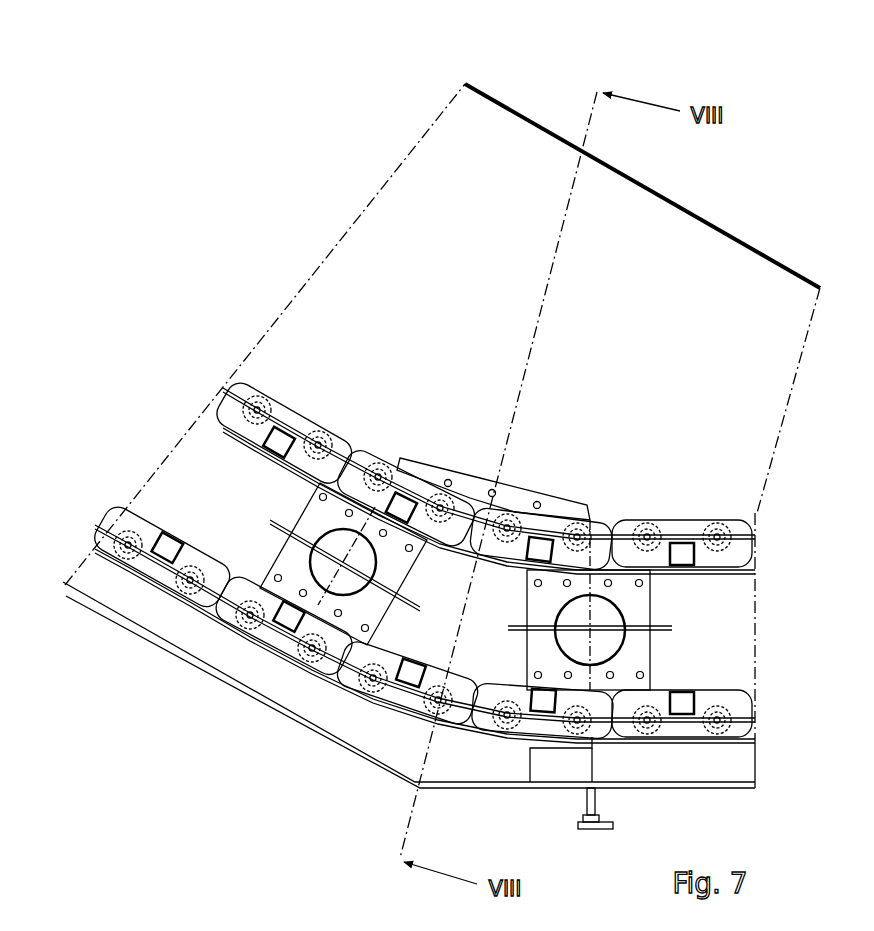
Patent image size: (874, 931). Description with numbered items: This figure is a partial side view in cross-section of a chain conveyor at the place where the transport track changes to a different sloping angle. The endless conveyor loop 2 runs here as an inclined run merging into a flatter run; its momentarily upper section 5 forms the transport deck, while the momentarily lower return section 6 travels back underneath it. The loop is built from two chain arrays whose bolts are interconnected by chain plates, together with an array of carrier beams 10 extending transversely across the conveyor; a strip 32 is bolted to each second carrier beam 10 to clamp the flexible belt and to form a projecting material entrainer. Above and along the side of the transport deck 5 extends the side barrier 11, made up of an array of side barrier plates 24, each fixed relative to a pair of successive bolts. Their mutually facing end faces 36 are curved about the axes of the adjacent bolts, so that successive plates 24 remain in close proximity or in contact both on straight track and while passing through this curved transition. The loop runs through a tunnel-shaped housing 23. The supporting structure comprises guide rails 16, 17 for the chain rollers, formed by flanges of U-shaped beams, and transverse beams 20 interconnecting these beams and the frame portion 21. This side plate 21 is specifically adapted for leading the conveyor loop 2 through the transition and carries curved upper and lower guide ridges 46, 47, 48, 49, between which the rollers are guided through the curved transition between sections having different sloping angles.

The conveyor loop 2 is at (193, 531).
The upper section 5 is at (340, 465).
The lower return section 6 is at (362, 708).
The carrier beam 10 is at (452, 559).
The side barrier 11 is at (382, 446).
The guide rail 16 is at (523, 506).
The guide rail 17 is at (220, 600).
The transverse beam 20 is at (510, 584).
The frame portion 21 is at (488, 762).
The tunnel-shaped housing 23 is at (643, 186).
The side barrier plate 24 is at (683, 520).
The strip 32 is at (268, 433).
The end face 36 is at (480, 549).
The guide ridge 46 is at (462, 540).
The guide ridge 47 is at (468, 537).
The guide ridge 48 is at (473, 718).
The guide ridge 49 is at (473, 722).